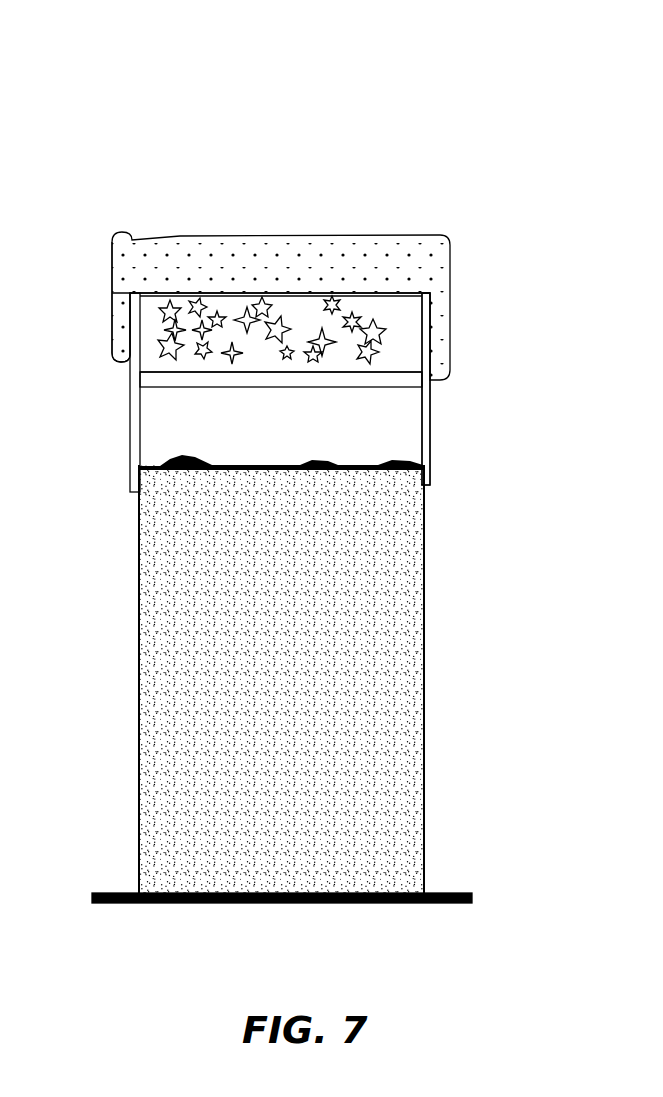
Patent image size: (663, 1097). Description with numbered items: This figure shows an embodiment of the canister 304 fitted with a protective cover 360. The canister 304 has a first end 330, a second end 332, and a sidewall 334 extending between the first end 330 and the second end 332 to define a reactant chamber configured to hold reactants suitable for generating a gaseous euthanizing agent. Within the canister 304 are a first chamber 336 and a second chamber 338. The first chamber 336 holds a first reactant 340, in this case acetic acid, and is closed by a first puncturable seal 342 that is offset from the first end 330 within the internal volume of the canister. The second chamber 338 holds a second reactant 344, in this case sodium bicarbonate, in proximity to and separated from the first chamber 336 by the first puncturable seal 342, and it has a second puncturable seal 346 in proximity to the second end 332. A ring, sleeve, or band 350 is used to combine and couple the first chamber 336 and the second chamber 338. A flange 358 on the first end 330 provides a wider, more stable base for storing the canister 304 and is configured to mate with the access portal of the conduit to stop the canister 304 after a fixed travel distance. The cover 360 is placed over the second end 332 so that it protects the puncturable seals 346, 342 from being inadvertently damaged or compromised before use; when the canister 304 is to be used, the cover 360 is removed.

The canister 304 is at (322, 90).
The first end 330 is at (203, 905).
The second end 332 is at (122, 287).
The sidewall 334 is at (425, 647).
The first chamber 336 is at (128, 716).
The second chamber 338 is at (128, 333).
The first reactant 340 is at (380, 740).
The first puncturable seal 342 is at (195, 380).
The second reactant 344 is at (200, 300).
The second puncturable seal 346 is at (400, 294).
The ring, sleeve, or band 350 is at (428, 445).
The flange 358 is at (118, 905).
The cover 360 is at (332, 235).